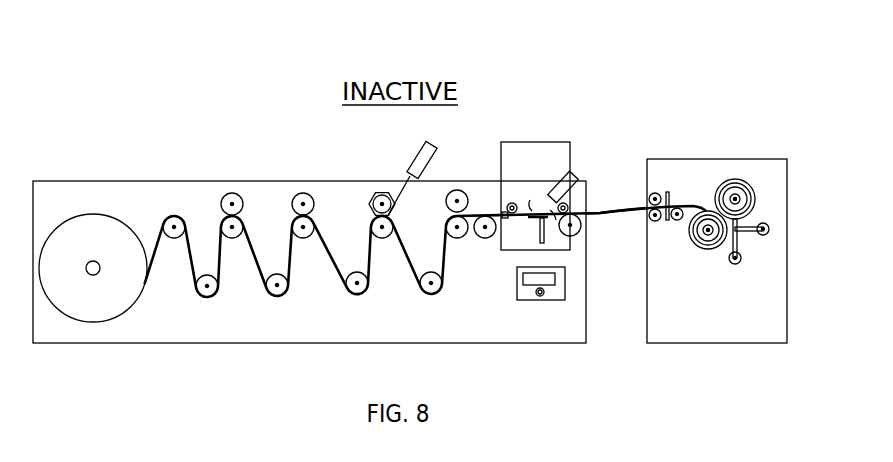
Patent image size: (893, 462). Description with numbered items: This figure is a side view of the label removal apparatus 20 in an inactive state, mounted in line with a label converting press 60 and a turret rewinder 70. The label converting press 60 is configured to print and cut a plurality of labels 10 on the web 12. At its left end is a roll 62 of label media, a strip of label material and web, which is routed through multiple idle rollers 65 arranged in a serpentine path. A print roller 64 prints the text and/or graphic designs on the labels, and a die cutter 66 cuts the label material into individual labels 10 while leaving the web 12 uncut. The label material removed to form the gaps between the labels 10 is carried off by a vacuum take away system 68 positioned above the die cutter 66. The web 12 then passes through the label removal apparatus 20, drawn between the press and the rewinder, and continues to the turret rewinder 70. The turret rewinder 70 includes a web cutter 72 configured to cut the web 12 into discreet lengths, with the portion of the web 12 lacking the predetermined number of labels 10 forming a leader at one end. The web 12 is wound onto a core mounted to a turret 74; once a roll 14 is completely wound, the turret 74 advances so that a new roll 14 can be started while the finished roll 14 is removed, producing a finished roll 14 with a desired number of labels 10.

The labels 10 is at (620, 208).
The web 12 is at (600, 214).
The roll 14 is at (742, 180).
The label removal apparatus 20 is at (537, 114).
The label converting press 60 is at (218, 134).
The roll of label media 62 is at (97, 216).
The print roller 64 is at (304, 196).
The idle rollers 65 is at (232, 238).
The die cutter 66 is at (377, 196).
The vacuum take away system 68 is at (432, 148).
The turret rewinder 70 is at (716, 104).
The web cutter 72 is at (667, 192).
The turret 74 is at (743, 235).